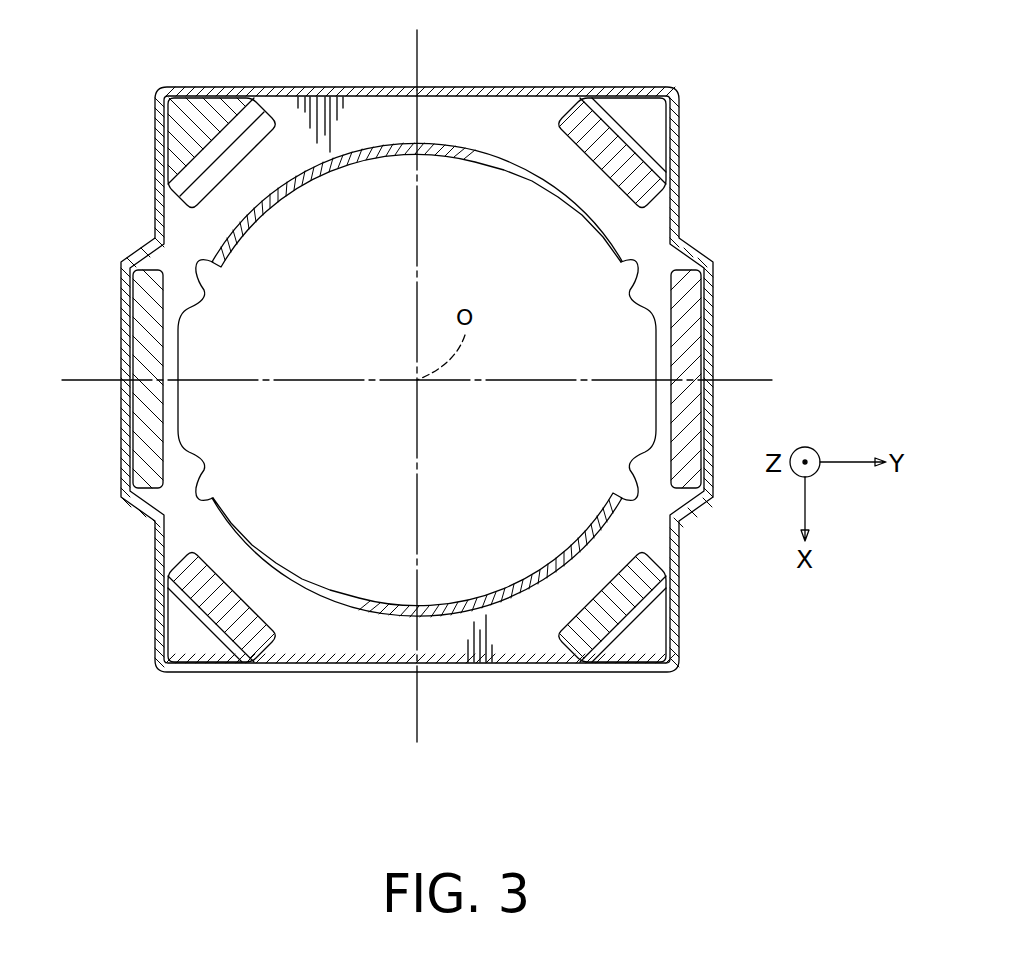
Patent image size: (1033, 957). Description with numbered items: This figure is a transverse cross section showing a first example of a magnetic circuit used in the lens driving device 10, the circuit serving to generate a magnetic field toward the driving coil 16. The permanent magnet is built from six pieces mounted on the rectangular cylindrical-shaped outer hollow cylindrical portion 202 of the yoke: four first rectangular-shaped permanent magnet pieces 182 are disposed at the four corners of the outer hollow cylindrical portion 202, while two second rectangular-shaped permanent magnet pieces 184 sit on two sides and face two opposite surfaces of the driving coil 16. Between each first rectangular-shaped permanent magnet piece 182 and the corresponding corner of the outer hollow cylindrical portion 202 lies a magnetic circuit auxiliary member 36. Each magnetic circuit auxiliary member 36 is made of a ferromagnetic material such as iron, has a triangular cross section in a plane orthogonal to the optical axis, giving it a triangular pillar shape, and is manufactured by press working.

The lens driving device 10 is at (782, 122).
The driving coil 16 is at (368, 150).
The magnetic circuit auxiliary member 36 is at (203, 647).
The first rectangular-shaped permanent magnet piece 182 is at (183, 576).
The second rectangular-shaped permanent magnet piece 184 is at (140, 303).
The outer hollow cylindrical portion 202 is at (480, 87).